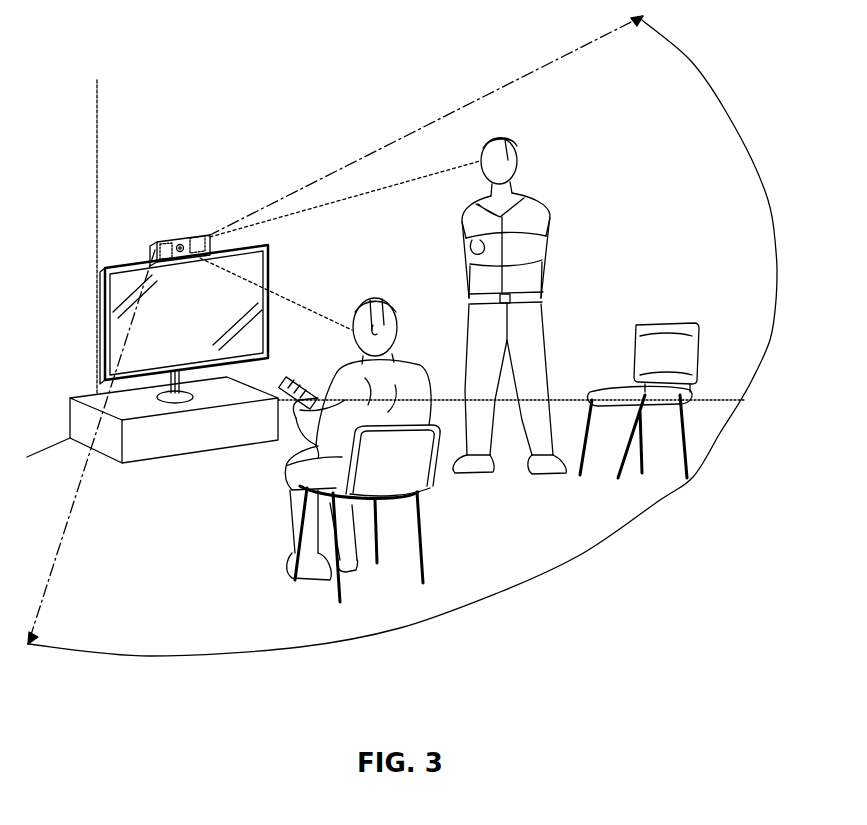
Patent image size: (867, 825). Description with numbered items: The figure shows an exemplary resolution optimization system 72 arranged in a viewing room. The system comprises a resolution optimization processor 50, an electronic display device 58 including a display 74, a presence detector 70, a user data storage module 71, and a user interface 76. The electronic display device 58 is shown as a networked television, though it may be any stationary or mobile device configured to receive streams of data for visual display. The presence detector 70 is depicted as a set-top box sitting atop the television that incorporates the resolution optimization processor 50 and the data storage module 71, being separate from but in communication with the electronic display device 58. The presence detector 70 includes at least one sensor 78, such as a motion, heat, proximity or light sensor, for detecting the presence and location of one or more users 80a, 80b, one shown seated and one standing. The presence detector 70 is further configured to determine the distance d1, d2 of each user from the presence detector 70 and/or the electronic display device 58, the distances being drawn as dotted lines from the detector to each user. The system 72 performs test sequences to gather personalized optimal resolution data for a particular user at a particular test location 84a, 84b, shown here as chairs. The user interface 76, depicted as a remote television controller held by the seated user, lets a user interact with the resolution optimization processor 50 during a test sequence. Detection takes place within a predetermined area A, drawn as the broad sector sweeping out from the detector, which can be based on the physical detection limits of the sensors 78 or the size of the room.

The resolution optimization processor 50 is at (175, 219).
The electronic display device 58 is at (162, 315).
The presence detector 70 is at (207, 237).
The user data storage module 71 is at (152, 242).
The resolution optimization system 72 is at (290, 262).
The display 74 is at (117, 278).
The user interface 76 is at (302, 386).
The sensor 78 is at (177, 243).
The user 80a is at (402, 310).
The user 80b is at (545, 152).
The test location 84a is at (436, 525).
The test location 84b is at (633, 323).
The predetermined area A is at (398, 630).
The distance d1 is at (276, 294).
The distance d2 is at (345, 199).